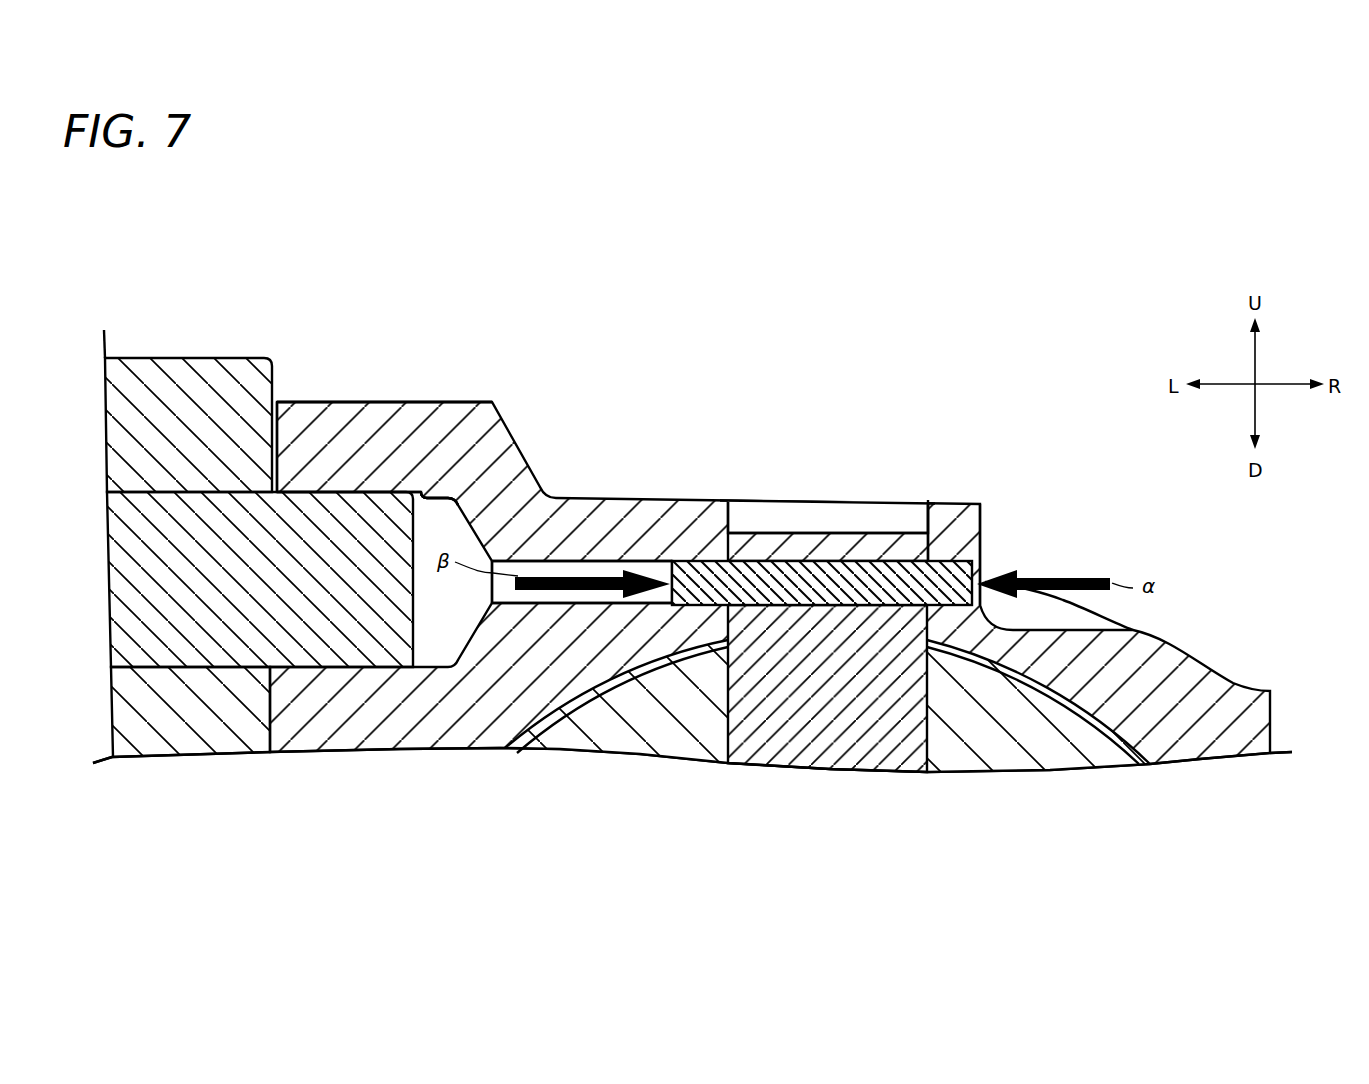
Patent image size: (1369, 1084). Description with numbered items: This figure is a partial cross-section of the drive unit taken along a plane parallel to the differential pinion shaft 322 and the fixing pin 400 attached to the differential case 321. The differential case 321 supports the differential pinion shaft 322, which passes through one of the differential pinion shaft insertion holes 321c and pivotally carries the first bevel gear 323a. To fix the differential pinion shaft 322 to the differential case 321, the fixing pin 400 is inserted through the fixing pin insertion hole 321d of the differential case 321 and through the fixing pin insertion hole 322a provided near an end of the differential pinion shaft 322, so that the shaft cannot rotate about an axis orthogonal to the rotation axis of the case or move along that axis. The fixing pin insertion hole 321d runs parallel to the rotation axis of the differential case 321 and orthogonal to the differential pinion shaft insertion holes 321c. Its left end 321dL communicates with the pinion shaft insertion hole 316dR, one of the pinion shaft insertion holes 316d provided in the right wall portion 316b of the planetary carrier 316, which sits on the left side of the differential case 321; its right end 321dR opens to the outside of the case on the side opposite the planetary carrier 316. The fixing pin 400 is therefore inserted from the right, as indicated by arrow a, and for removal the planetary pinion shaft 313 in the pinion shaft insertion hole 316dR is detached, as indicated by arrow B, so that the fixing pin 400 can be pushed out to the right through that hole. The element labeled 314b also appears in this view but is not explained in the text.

The planetary pinion shaft 313 is at (290, 520).
The flange portion 314b is at (177, 372).
The planetary carrier 316 is at (398, 397).
The right wall portion 316b is at (357, 400).
The pinion shaft insertion hole 316d is at (439, 498).
The pinion shaft insertion hole 316dR is at (456, 503).
The differential case 321 is at (1258, 690).
The differential pinion shaft insertion hole 321c is at (937, 577).
The fixing pin insertion hole 321d is at (575, 569).
The left end of the fixing pin insertion hole 321dL is at (498, 588).
The right end of the fixing pin insertion hole 321dR is at (975, 566).
The differential pinion shaft 322 is at (823, 540).
The fixing pin insertion hole 322a is at (778, 568).
The first bevel gear 323a is at (1047, 748).
The fixing pin 400 is at (993, 563).